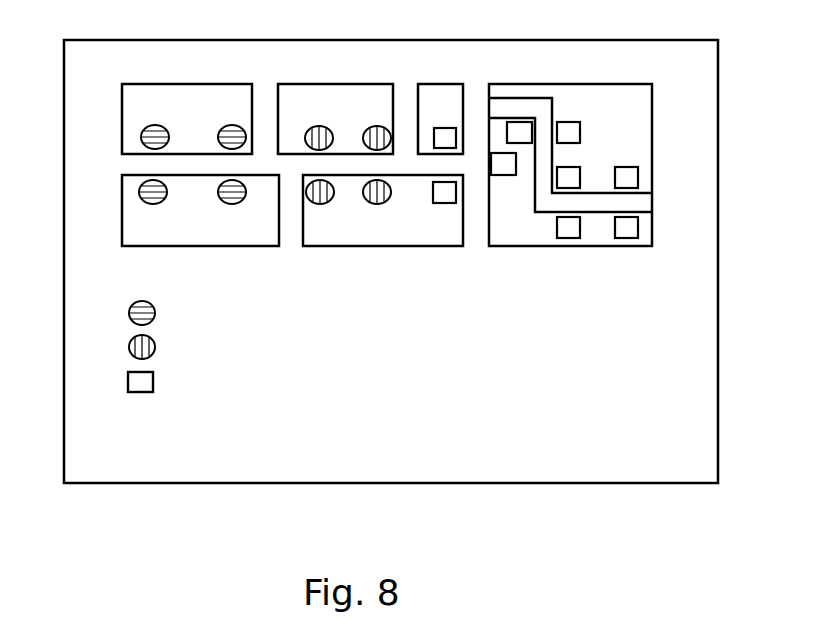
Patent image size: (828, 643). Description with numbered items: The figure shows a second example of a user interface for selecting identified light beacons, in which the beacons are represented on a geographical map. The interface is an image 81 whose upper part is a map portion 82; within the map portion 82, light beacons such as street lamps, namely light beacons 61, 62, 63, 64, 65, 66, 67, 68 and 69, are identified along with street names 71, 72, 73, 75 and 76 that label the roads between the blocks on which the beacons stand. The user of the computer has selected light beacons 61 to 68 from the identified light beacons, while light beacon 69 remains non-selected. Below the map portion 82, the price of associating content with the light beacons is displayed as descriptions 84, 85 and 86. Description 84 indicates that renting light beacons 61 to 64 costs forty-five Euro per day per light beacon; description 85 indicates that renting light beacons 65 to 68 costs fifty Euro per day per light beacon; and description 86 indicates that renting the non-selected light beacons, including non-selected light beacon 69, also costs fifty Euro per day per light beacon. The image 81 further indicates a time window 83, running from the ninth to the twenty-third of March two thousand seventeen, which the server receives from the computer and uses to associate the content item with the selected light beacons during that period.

The light beacon 61 is at (141, 138).
The light beacon 62 is at (166, 194).
The light beacon 63 is at (218, 138).
The light beacon 64 is at (245, 194).
The light beacon 65 is at (305, 138).
The light beacon 66 is at (333, 194).
The light beacon 67 is at (363, 138).
The light beacon 68 is at (390, 194).
The light beacon 69 is at (438, 138).
The street name 71 is at (269, 165).
The street name 72 is at (266, 116).
The street name 73 is at (294, 213).
The street name 75 is at (478, 173).
The street name 76 is at (570, 167).
The image 81 is at (662, 483).
The map portion 82 is at (633, 247).
The time window 83 is at (353, 277).
The description 84 is at (247, 317).
The description 85 is at (247, 350).
The description 86 is at (247, 385).